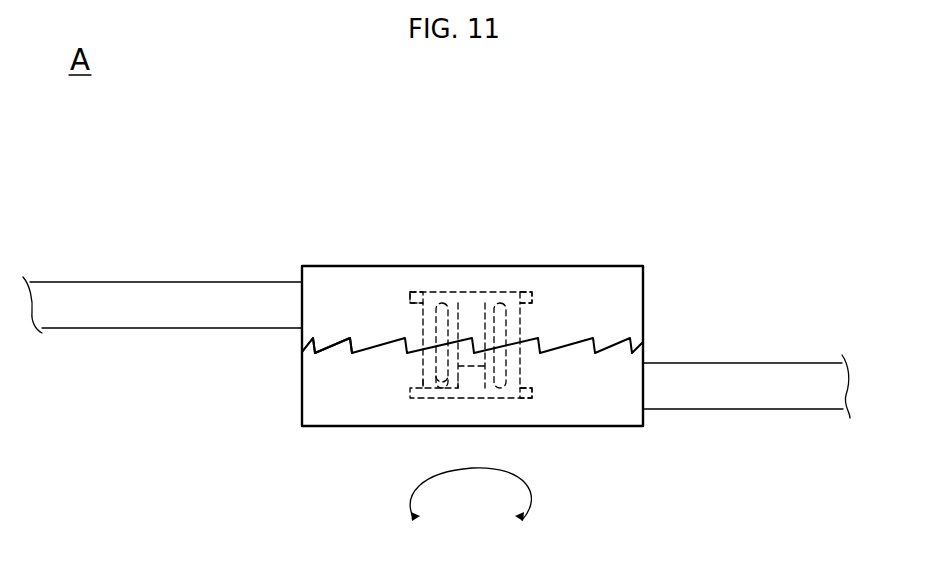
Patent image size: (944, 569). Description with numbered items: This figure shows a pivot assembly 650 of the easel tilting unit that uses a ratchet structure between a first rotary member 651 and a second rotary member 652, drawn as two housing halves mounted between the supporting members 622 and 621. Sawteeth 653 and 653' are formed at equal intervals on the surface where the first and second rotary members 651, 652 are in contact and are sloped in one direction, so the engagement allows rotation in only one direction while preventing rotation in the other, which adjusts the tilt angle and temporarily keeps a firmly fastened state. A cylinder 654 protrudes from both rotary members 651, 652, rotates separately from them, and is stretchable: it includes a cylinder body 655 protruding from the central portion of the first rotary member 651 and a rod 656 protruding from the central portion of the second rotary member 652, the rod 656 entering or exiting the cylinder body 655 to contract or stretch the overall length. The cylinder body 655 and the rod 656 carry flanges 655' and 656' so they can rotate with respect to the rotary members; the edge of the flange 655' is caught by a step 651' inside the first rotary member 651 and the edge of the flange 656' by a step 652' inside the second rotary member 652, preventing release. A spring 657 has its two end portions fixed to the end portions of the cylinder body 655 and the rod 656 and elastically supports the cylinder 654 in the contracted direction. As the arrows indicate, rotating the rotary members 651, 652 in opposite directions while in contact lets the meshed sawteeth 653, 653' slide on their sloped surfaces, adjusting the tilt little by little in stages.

The second rod 621 is at (817, 402).
The first rod 622 is at (142, 297).
The pivot assembly 650 is at (480, 251).
The first rotary member 651 is at (495, 429).
The step 651' is at (555, 433).
The second rotary member 652 is at (472, 237).
The step 652' is at (416, 260).
The sawteeth 653 is at (392, 376).
The sawteeth 653' is at (247, 354).
The cylinder 654 is at (728, 258).
The cylinder body 655 is at (580, 337).
The flange 655' is at (409, 430).
The rod 656 is at (567, 323).
The flange 656' is at (580, 245).
The spring 657 is at (437, 385).